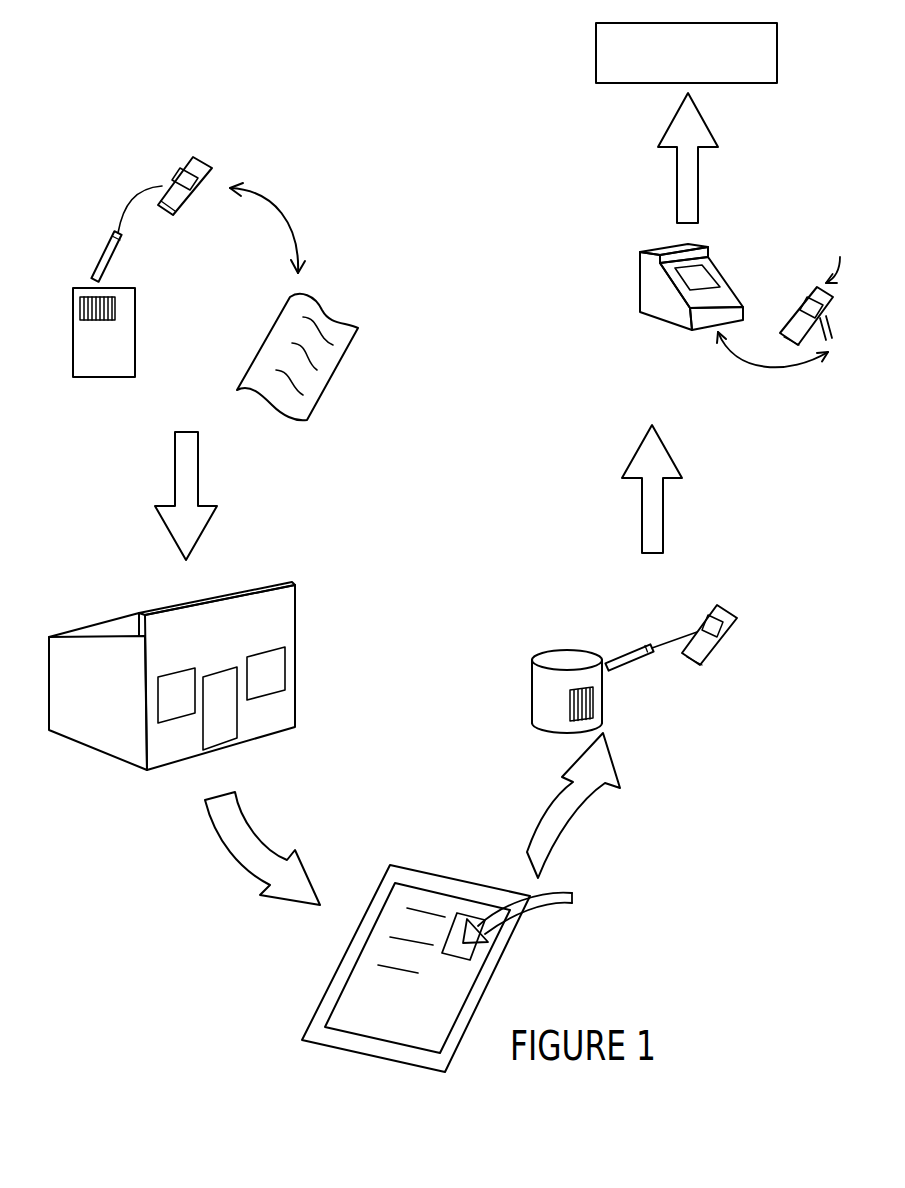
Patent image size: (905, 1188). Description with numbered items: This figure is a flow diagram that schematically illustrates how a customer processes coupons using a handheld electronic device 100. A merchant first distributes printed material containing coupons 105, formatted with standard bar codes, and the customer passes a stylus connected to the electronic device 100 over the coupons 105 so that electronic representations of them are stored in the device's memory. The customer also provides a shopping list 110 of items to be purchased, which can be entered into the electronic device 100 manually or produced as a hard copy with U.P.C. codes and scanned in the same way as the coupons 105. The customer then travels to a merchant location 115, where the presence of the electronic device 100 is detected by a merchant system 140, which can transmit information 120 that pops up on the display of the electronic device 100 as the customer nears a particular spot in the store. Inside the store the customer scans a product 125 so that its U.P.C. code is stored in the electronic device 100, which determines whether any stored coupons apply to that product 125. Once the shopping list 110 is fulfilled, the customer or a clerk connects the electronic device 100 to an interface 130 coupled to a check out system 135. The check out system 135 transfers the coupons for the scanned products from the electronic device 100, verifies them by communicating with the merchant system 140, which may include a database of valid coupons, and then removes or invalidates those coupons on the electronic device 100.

The electronic device 100 is at (177, 173).
The coupons 105 is at (73, 312).
The shopping list 110 is at (333, 318).
The merchant location 115 is at (115, 633).
The information 120 is at (526, 924).
The product 125 is at (532, 685).
The interface 130 is at (827, 334).
The check out system 135 is at (640, 283).
The merchant system 140 is at (596, 50).